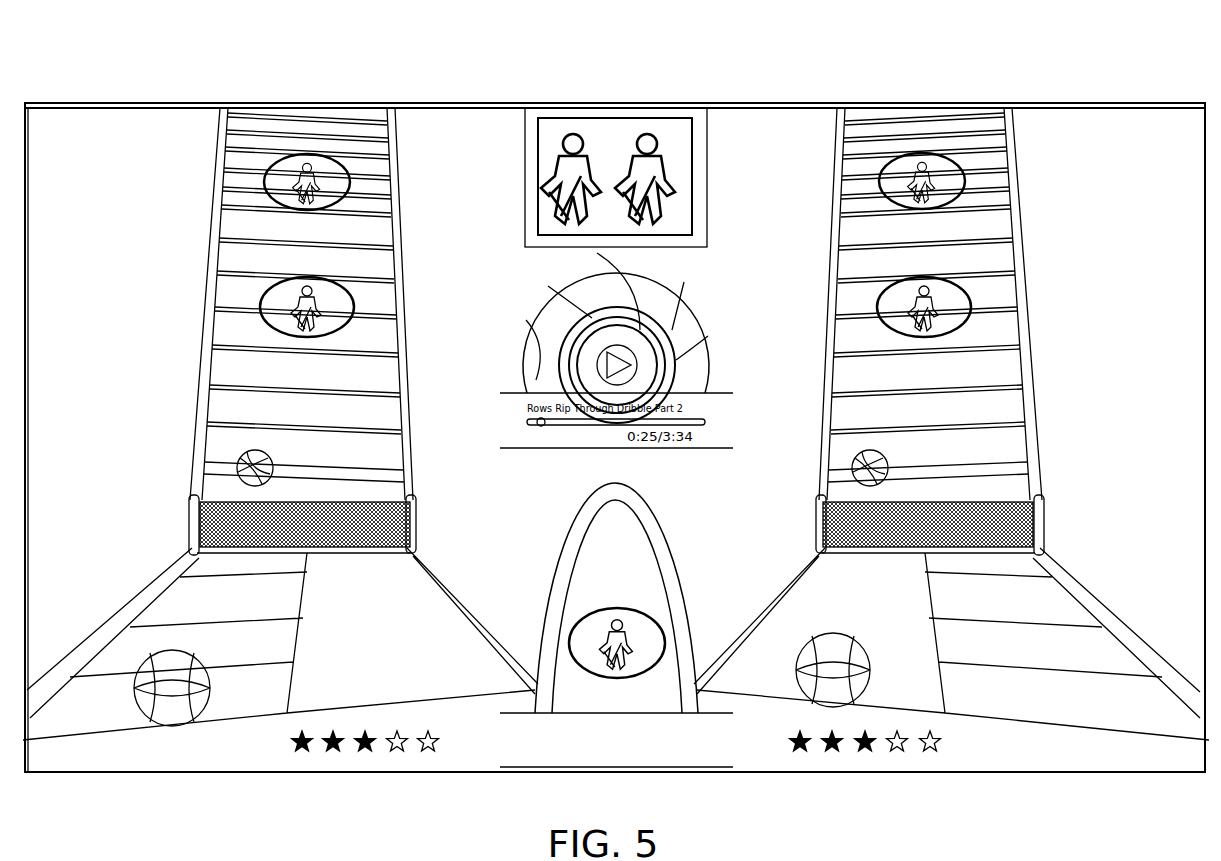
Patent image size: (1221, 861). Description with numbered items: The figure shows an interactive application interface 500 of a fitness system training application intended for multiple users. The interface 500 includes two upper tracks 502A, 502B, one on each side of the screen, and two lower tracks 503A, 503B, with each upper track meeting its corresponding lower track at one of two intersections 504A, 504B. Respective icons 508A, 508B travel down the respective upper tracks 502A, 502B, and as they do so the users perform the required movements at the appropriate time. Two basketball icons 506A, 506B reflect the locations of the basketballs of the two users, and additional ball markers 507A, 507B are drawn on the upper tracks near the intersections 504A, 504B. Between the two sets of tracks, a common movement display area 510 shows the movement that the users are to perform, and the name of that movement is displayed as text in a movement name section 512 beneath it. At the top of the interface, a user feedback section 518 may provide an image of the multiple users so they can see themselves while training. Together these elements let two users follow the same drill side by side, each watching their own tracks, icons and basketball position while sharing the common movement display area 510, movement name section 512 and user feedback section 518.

The interactive application interface 500 is at (808, 86).
The upper track 502A is at (420, 268).
The upper track 502B is at (1046, 253).
The lower track 503A is at (492, 596).
The lower track 503B is at (754, 570).
The intersection 504A is at (386, 517).
The intersection 504B is at (1017, 518).
The basketball icon 506A is at (198, 670).
The basketball icon 506B is at (845, 668).
The first ball indicator 507A is at (238, 466).
The second ball indicator 507B is at (853, 466).
The icon 508A is at (261, 305).
The icon 508B is at (879, 308).
The common movement display area 510 is at (570, 502).
The movement name section 512 is at (540, 736).
The user feedback section 518 is at (637, 120).